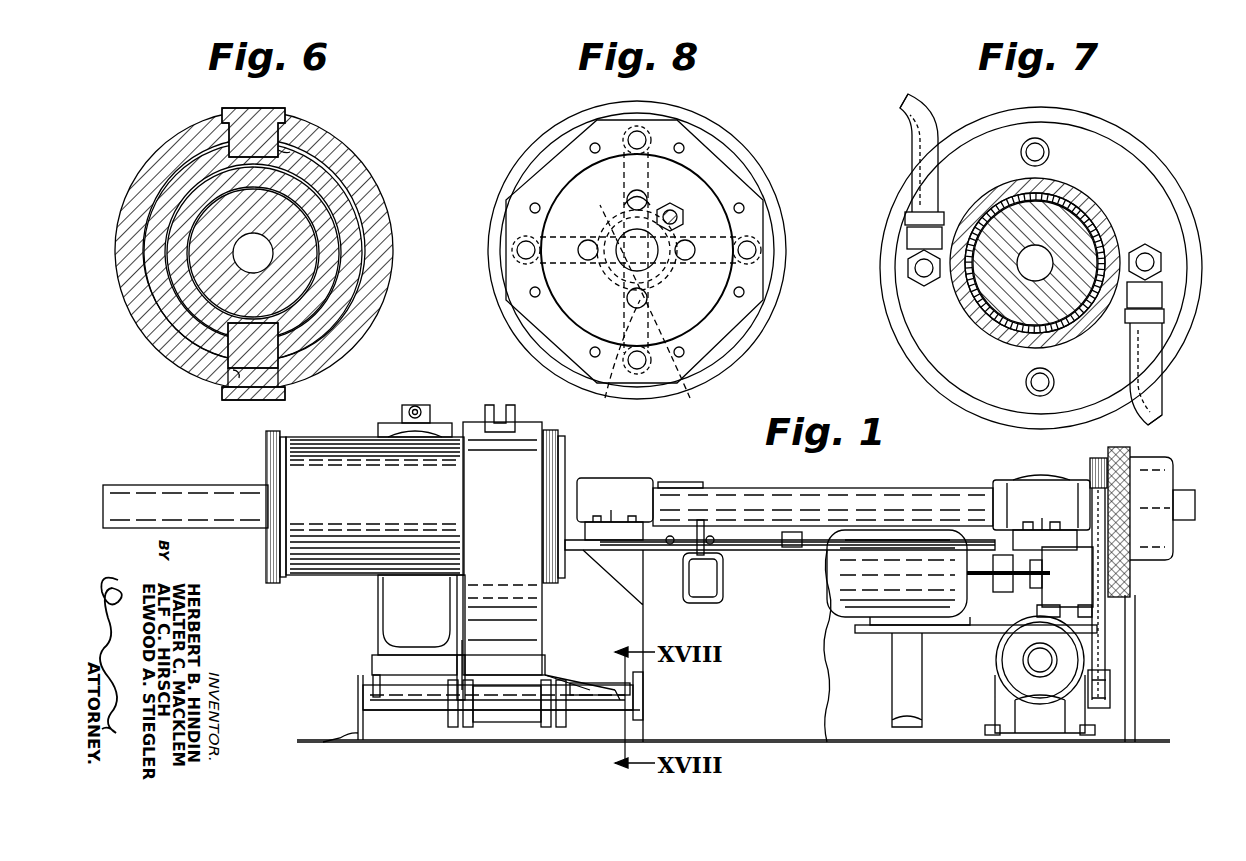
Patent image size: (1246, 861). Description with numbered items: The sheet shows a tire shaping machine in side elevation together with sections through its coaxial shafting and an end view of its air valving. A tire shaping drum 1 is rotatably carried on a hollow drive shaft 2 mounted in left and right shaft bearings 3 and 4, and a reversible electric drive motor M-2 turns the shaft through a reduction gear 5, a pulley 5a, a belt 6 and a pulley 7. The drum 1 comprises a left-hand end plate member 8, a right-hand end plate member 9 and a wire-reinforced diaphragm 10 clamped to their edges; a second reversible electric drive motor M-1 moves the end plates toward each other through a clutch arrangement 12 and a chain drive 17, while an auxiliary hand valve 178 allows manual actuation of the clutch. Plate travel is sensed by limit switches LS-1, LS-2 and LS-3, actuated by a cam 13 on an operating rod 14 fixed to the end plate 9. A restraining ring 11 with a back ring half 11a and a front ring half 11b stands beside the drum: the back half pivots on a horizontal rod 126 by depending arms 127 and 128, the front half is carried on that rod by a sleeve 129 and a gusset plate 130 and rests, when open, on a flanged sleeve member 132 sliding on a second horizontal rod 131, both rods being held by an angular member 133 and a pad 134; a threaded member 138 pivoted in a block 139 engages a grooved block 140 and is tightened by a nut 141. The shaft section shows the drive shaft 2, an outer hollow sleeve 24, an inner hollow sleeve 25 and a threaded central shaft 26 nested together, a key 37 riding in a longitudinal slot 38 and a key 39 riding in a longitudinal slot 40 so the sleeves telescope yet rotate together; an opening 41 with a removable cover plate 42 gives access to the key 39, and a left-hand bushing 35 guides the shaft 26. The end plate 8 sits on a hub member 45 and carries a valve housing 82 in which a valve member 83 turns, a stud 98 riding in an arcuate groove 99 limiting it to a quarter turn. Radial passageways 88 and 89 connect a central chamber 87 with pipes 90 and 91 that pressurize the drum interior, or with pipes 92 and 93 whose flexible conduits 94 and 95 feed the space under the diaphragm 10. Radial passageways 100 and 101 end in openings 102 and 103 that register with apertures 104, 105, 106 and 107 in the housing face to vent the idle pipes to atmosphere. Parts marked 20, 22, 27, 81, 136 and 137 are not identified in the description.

In FIG. 1, the tire shaping drum 1 is at (343, 592).
In FIG. 6, the hollow drive shaft 2 is at (340, 163).
In FIG. 1, the hollow drive shaft 2 is at (745, 487).
In FIG. 1, the left shaft bearing 3 is at (625, 480).
In FIG. 1, the right shaft bearing 4 is at (1027, 485).
In FIG. 1, the reduction gear 5 is at (1043, 715).
In FIG. 1, the pulley 5a is at (1112, 690).
In FIG. 1, the belt 6 is at (1106, 640).
In FIG. 1, the pulley 7 is at (1089, 472).
In FIG. 1, the left-hand end plate member 8 is at (265, 456).
In FIG. 1, the right-hand end plate member 9 is at (567, 447).
In FIG. 1, the diaphragm 10 is at (360, 437).
In FIG. 1, the restraining ring 11 is at (370, 634).
In FIG. 1, the back ring half 11a is at (380, 618).
In FIG. 1, the front ring half 11b is at (538, 606).
In FIG. 1, the clutch arrangement 12 is at (1182, 553).
In FIG. 1, the cam 13 is at (790, 530).
In FIG. 1, the operating rod 14 is at (772, 548).
In FIG. 1, the chain drive 17 is at (1131, 588).
In FIG. 1, the foot 20 is at (990, 735).
In FIG. 1, the support post 22 is at (895, 693).
In FIG. 6, the outer hollow sleeve 24 is at (340, 203).
In FIG. 6, the inner hollow sleeve 25 is at (334, 240).
In FIG. 7, the inner hollow sleeve 25 is at (1056, 184).
In FIG. 6, the threaded central shaft 26 is at (309, 262).
In FIG. 7, the threaded central shaft 26 is at (1071, 231).
In FIG. 6, the bore 27 is at (265, 262).
In FIG. 7, the bore 27 is at (1038, 265).
In FIG. 7, the left-hand bushing 35 is at (1071, 204).
In FIG. 6, the key 37 is at (272, 108).
In FIG. 6, the longitudinal slot 38 is at (287, 156).
In FIG. 6, the key 39 is at (280, 368).
In FIG. 6, the longitudinal slot 40 is at (268, 330).
In FIG. 6, the opening 41 is at (236, 393).
In FIG. 6, the removable cover plate 42 is at (278, 393).
In FIG. 7, the hub member 45 is at (913, 350).
In FIG. 8, the end plate 81 is at (757, 162).
In FIG. 8, the valve housing 82 is at (729, 320).
In FIG. 8, the valve member 83 is at (723, 368).
In FIG. 8, the central chamber 87 is at (652, 265).
In FIG. 8, the radial passageway 88 is at (665, 150).
In FIG. 8, the radial passageway 89 is at (605, 398).
In FIG. 8, the pipe 90 is at (650, 125).
In FIG. 7, the pipe 90 is at (1034, 138).
In FIG. 8, the pipe 91 is at (690, 398).
In FIG. 7, the pipe 91 is at (1036, 389).
In FIG. 8, the pipe 92 is at (765, 258).
In FIG. 7, the pipe 92 is at (905, 278).
In FIG. 8, the pipe 93 is at (511, 262).
In FIG. 7, the pipe 93 is at (1163, 262).
In FIG. 7, the flexible conduit 94 is at (918, 140).
In FIG. 7, the flexible conduit 95 is at (1158, 405).
In FIG. 8, the stud 98 is at (668, 203).
In FIG. 8, the arcuate groove 99 is at (610, 215).
In FIG. 8, the radial passageway 100 is at (530, 282).
In FIG. 8, the radial passageway 101 is at (745, 220).
In FIG. 8, the opening 102 is at (588, 246).
In FIG. 8, the opening 103 is at (687, 256).
In FIG. 8, the aperture 104 is at (588, 258).
In FIG. 8, the aperture 105 is at (646, 300).
In FIG. 8, the aperture 106 is at (690, 242).
In FIG. 8, the aperture 107 is at (635, 190).
In FIG. 1, the horizontal rod 126 is at (612, 685).
In FIG. 1, the depending arm 127 is at (372, 664).
In FIG. 1, the depending arm 128 is at (455, 665).
In FIG. 1, the sleeve 129 is at (582, 690).
In FIG. 1, the gusset plate 130 is at (582, 690).
In FIG. 1, the second horizontal rod 131 is at (566, 712).
In FIG. 1, the flanged sleeve member 132 is at (490, 712).
In FIG. 1, the angular member 133 is at (358, 725).
In FIG. 1, the pad 134 is at (644, 698).
In FIG. 1, the rod 136 is at (532, 640).
In FIG. 1, the link 137 is at (545, 672).
In FIG. 1, the threaded member 138 is at (404, 408).
In FIG. 1, the block 139 is at (440, 420).
In FIG. 1, the grooved block 140 is at (516, 413).
In FIG. 1, the nut 141 is at (420, 404).
In FIG. 1, the auxiliary hand valve 178 is at (710, 590).
In FIG. 1, the limit switch LS-1 is at (668, 546).
In FIG. 1, the limit switch LS-2 is at (716, 546).
In FIG. 1, the limit switch LS-3 is at (792, 550).
In FIG. 1, the reversible electric drive motor M-1 is at (840, 620).
In FIG. 1, the reversible electric drive motor M-2 is at (1020, 660).